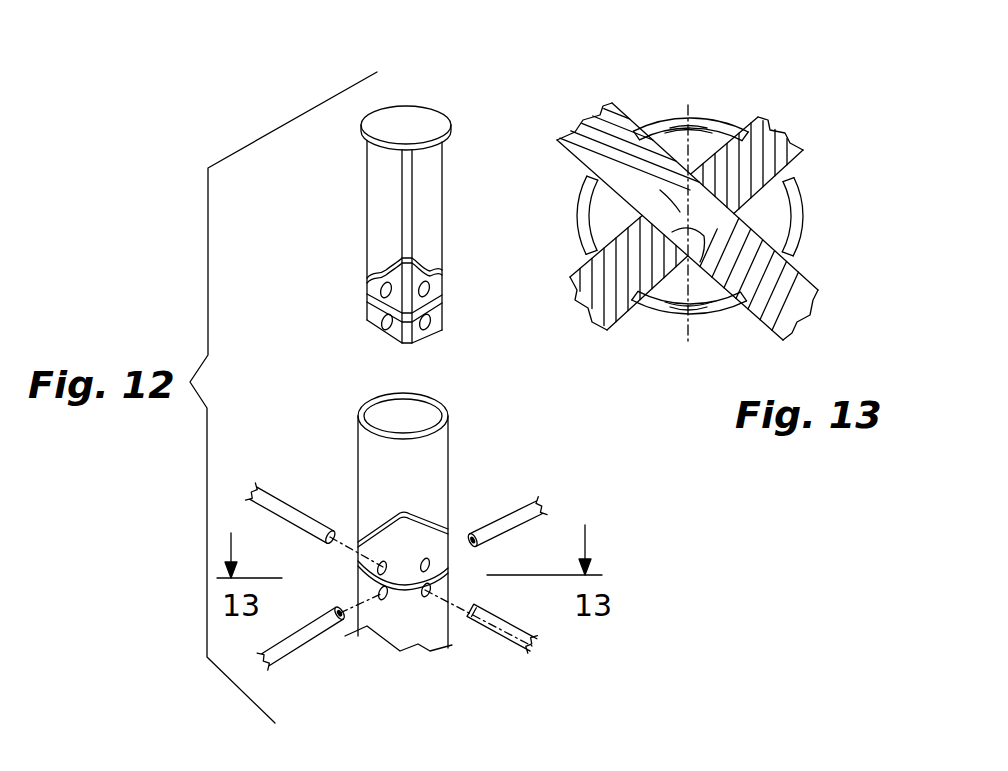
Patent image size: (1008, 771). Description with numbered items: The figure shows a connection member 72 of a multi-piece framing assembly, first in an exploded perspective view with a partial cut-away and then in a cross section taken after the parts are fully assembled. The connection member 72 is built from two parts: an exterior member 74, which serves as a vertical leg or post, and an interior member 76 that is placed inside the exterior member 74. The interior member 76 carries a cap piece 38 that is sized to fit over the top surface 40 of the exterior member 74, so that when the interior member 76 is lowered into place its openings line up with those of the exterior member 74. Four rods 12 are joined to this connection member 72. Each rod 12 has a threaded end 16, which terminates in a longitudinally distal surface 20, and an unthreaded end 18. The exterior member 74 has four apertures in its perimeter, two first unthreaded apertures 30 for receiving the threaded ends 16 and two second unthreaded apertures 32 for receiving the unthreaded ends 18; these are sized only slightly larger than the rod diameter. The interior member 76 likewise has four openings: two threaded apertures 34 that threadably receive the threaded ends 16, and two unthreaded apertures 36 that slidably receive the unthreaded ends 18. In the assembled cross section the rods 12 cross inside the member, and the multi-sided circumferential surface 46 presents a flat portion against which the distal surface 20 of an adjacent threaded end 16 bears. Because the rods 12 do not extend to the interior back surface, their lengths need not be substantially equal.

In FIG. 12, the rod 12 is at (272, 498).
In FIG. 12, the threaded end 16 is at (472, 535).
In FIG. 13, the threaded end 16 is at (600, 227).
In FIG. 12, the unthreaded end 18 is at (306, 520).
In FIG. 13, the unthreaded end 18 is at (625, 108).
In FIG. 13, the longitudinally distal surface 20 is at (762, 225).
In FIG. 12, the first unthreaded aperture 30 is at (427, 560).
In FIG. 12, the second unthreaded aperture 32 is at (385, 560).
In FIG. 12, the threaded aperture 34 is at (424, 285).
In FIG. 12, the unthreaded aperture 36 is at (378, 282).
In FIG. 12, the cap piece 38 is at (432, 122).
In FIG. 12, the top surface 40 is at (448, 416).
In FIG. 13, the multi-sided circumferential surface 46 is at (697, 128).
In FIG. 12, the connection member 72 is at (325, 319).
In FIG. 13, the connection member 72 is at (602, 74).
In FIG. 12, the exterior member 74 is at (478, 441).
In FIG. 13, the exterior member 74 is at (725, 118).
In FIG. 12, the interior member 76 is at (464, 194).
In FIG. 13, the interior member 76 is at (593, 185).